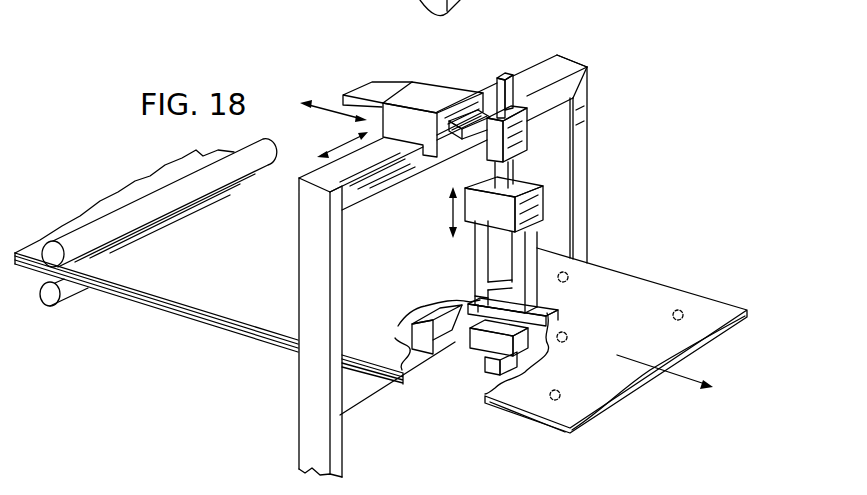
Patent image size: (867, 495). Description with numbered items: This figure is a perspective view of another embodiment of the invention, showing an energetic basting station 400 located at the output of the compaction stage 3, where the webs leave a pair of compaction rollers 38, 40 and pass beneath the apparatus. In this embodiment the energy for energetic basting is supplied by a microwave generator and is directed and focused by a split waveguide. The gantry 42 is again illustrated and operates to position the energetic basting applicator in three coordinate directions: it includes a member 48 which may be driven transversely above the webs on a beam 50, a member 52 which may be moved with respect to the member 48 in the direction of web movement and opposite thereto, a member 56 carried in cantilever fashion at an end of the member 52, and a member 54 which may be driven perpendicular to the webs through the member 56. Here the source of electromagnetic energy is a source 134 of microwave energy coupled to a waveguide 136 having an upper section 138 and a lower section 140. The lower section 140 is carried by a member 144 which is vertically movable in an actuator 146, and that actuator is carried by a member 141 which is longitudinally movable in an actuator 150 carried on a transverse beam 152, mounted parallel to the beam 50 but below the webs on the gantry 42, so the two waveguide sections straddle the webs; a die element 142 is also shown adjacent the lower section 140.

The compaction stage 3 is at (103, 188).
The upper roller 38 is at (50, 241).
The lower roller 40 is at (47, 306).
The gantry 42 is at (441, 84).
The member 48 is at (411, 86).
The beam 50 is at (356, 193).
The member 52 is at (478, 121).
The member 54 is at (508, 74).
The member 56 is at (520, 147).
The source of microwave energy 134 is at (478, 207).
The waveguide 136 is at (468, 261).
The upper section 138 is at (482, 291).
The lower section 140 is at (528, 318).
The member 141 is at (453, 333).
The die plate 142 is at (535, 310).
The member 144 is at (503, 348).
The actuator 146 is at (508, 363).
The actuator 150 is at (408, 334).
The transverse beam 152 is at (367, 388).
The energetic basting station 400 is at (525, 60).